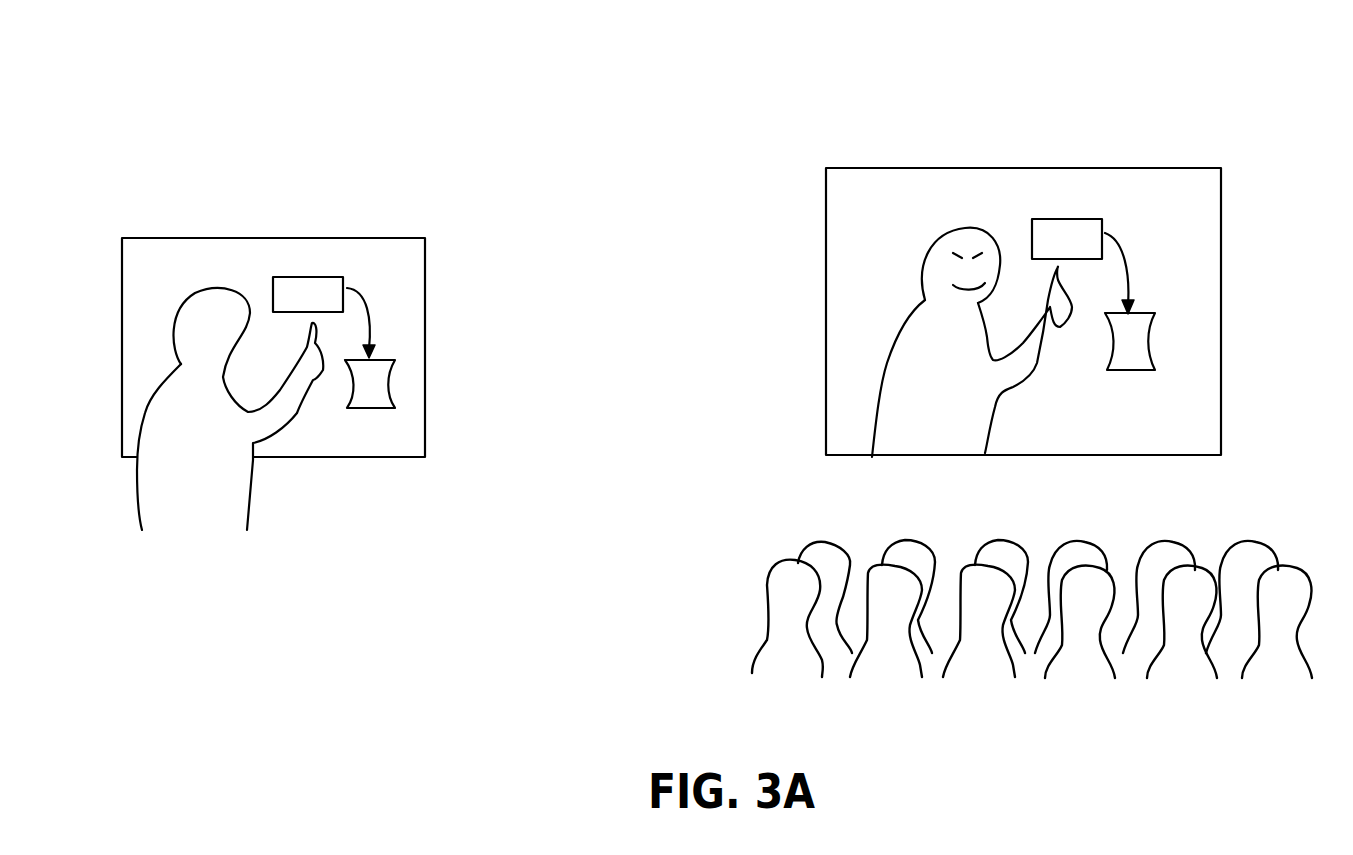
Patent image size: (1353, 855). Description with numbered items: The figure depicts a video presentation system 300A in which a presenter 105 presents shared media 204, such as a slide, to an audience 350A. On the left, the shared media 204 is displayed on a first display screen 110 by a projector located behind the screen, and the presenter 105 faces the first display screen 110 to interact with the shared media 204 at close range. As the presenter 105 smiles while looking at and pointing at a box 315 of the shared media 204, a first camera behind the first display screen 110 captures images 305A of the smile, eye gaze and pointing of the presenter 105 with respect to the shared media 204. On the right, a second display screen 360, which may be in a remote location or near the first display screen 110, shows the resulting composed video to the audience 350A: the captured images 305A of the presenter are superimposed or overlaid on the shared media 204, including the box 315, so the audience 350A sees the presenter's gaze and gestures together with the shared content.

The video presentation system 300A is at (193, 53).
The first display screen 110 is at (287, 237).
The presenter 105 is at (170, 497).
The box 315 is at (330, 288).
The shared media 204 is at (383, 337).
The second display screen 360 is at (972, 172).
The captured images 305A is at (907, 383).
The audience 350A is at (973, 683).